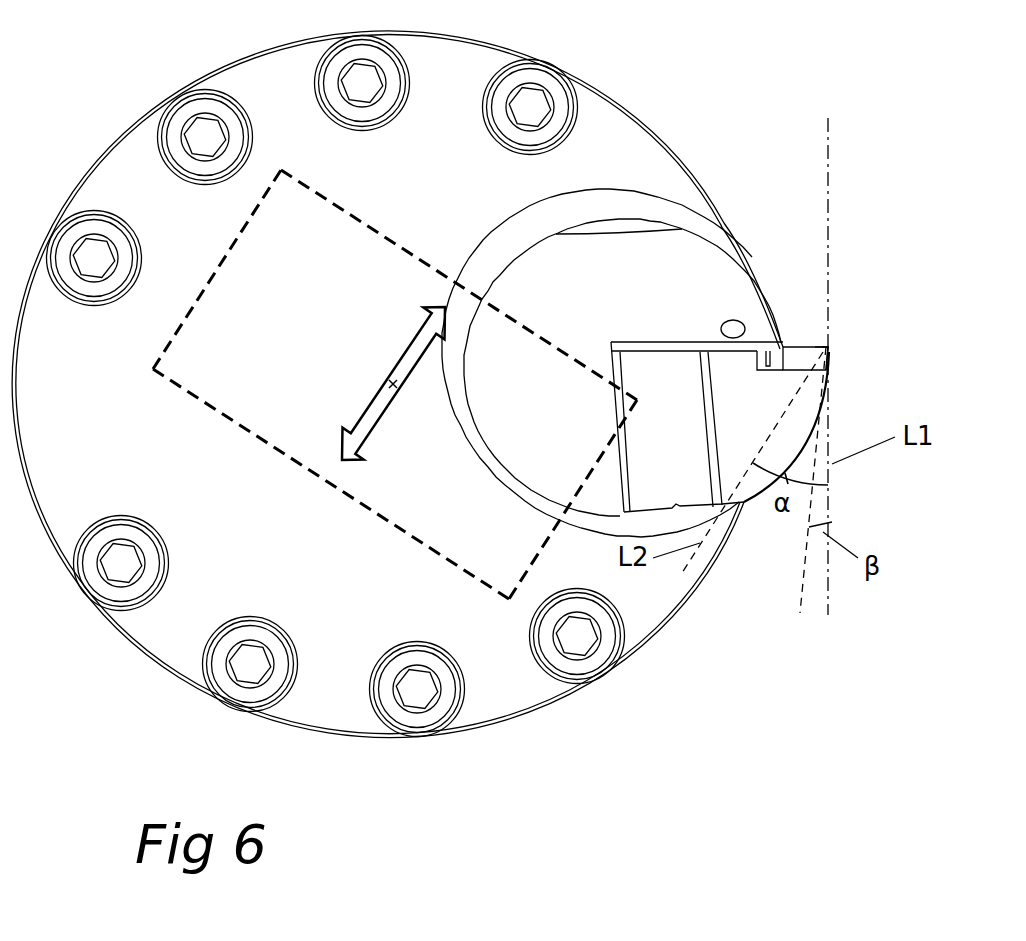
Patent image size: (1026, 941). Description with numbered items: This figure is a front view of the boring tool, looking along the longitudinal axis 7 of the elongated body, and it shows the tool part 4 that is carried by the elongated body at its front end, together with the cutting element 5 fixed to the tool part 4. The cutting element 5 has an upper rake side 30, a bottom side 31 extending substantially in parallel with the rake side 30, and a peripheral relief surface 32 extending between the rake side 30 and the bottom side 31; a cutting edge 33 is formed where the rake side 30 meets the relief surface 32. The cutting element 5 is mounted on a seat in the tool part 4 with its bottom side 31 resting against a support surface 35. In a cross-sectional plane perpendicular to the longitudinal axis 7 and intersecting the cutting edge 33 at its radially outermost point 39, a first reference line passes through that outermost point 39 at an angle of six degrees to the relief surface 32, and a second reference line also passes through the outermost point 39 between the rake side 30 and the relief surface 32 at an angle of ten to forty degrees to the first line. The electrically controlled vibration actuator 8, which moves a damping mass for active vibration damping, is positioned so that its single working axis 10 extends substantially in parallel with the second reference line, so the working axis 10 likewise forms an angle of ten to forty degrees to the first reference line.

The tool part 4 is at (680, 188).
The cutting element 5 is at (782, 352).
The longitudinal axis 7 is at (392, 382).
The vibration actuator 8 is at (242, 422).
The working axis 10 is at (362, 423).
The rake side 30 is at (798, 347).
The bottom side 31 is at (792, 367).
The relief surface 32 is at (828, 365).
The cutting edge 33 is at (829, 345).
The support surface 35 is at (778, 367).
The radially outermost point 39 is at (829, 347).